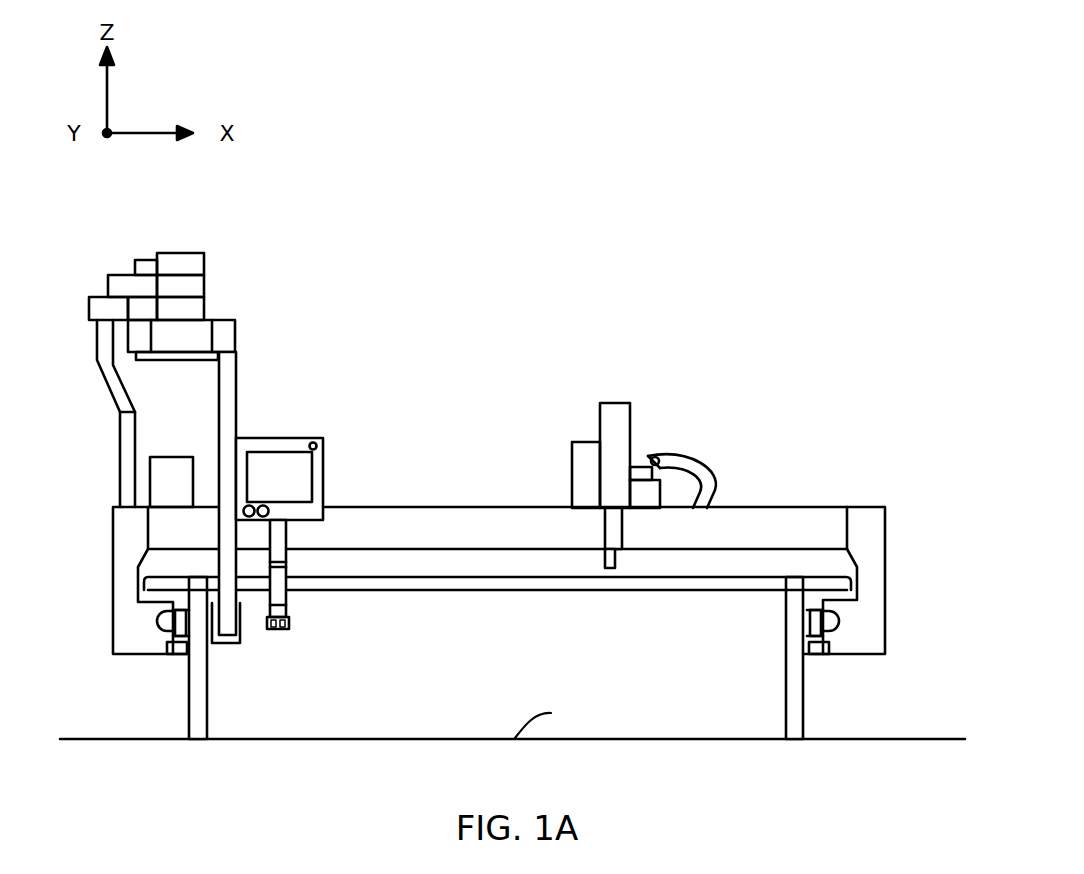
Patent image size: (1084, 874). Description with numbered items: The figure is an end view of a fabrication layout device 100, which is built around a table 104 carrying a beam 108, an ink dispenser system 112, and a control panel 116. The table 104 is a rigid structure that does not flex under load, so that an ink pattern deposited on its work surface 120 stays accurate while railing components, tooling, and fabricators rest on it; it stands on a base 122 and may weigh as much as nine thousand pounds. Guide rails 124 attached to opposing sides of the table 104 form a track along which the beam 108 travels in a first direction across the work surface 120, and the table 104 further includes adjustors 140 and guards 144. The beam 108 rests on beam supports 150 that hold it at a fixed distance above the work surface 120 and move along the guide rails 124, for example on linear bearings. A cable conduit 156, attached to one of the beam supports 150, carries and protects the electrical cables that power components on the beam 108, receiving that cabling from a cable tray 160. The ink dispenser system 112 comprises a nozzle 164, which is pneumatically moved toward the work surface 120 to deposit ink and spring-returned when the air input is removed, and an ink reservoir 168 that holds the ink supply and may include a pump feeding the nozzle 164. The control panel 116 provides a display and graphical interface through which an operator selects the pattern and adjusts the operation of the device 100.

The fabrication layout device 100 is at (730, 160).
The table 104 is at (176, 709).
The beam 108 is at (430, 508).
The ink dispenser system 112 is at (662, 391).
The control panel 116 is at (278, 438).
The work surface 120 is at (422, 578).
The base 122 is at (207, 710).
The guide rails 124 is at (167, 612).
The adjustors 140 is at (177, 657).
The guards 144 is at (163, 575).
The beam supports 150 is at (113, 527).
The cable conduit 156 is at (97, 366).
The cable tray 160 is at (233, 320).
The nozzle 164 is at (615, 568).
The ink reservoir 168 is at (152, 458).